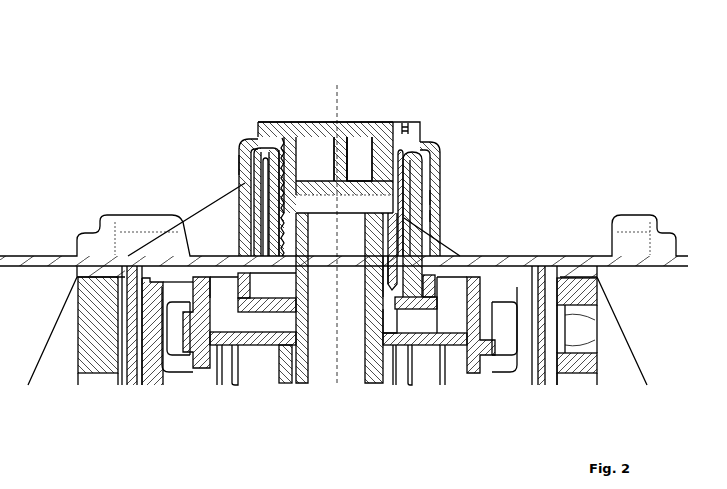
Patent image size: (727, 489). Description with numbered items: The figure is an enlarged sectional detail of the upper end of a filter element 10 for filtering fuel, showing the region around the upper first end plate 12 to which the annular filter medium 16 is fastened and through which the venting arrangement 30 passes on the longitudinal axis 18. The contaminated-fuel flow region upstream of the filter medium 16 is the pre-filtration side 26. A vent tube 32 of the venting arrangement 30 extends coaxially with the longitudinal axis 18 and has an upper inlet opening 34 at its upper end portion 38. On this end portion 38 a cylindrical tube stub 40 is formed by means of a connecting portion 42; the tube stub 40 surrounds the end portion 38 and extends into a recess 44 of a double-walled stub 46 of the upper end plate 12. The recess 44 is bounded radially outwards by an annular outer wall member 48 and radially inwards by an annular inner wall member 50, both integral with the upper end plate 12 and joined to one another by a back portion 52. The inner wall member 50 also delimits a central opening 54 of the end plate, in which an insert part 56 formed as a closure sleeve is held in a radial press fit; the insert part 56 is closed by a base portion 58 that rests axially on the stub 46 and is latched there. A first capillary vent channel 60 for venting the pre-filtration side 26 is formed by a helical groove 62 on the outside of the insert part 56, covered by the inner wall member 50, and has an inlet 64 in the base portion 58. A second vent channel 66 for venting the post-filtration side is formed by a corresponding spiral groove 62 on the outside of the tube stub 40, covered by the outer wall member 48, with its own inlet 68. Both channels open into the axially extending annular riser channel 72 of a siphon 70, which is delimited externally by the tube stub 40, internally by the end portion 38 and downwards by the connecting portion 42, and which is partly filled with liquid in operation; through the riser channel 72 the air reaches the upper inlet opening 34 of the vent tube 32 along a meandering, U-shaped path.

The filter element 10 is at (544, 132).
The upper first end plate 12 is at (62, 256).
The filter medium 16 is at (646, 331).
The longitudinal axis 18 is at (339, 88).
The pre-filtration side 26 is at (555, 213).
The venting arrangement 30 is at (438, 205).
The vent tube 32 is at (297, 320).
The upper inlet opening 34 is at (331, 206).
The upper end portion 38 is at (247, 213).
The tube stub 40 is at (436, 214).
The connecting portion 42 is at (393, 310).
The recess 44 is at (398, 294).
The double-walled stub 46 is at (233, 166).
The outer wall member 48 is at (258, 183).
The inner wall member 50 is at (408, 210).
The back portion 52 is at (258, 195).
The central opening 54 is at (325, 138).
The insert part 56 is at (281, 152).
The base portion 58 is at (368, 130).
The first capillary vent channel 60 is at (359, 159).
The groove 62 is at (390, 208).
The inlet 64 is at (397, 112).
The second vent channel 66 is at (440, 196).
The inlet 68 is at (433, 285).
The siphon 70 is at (409, 300).
The riser channel 72 is at (378, 256).